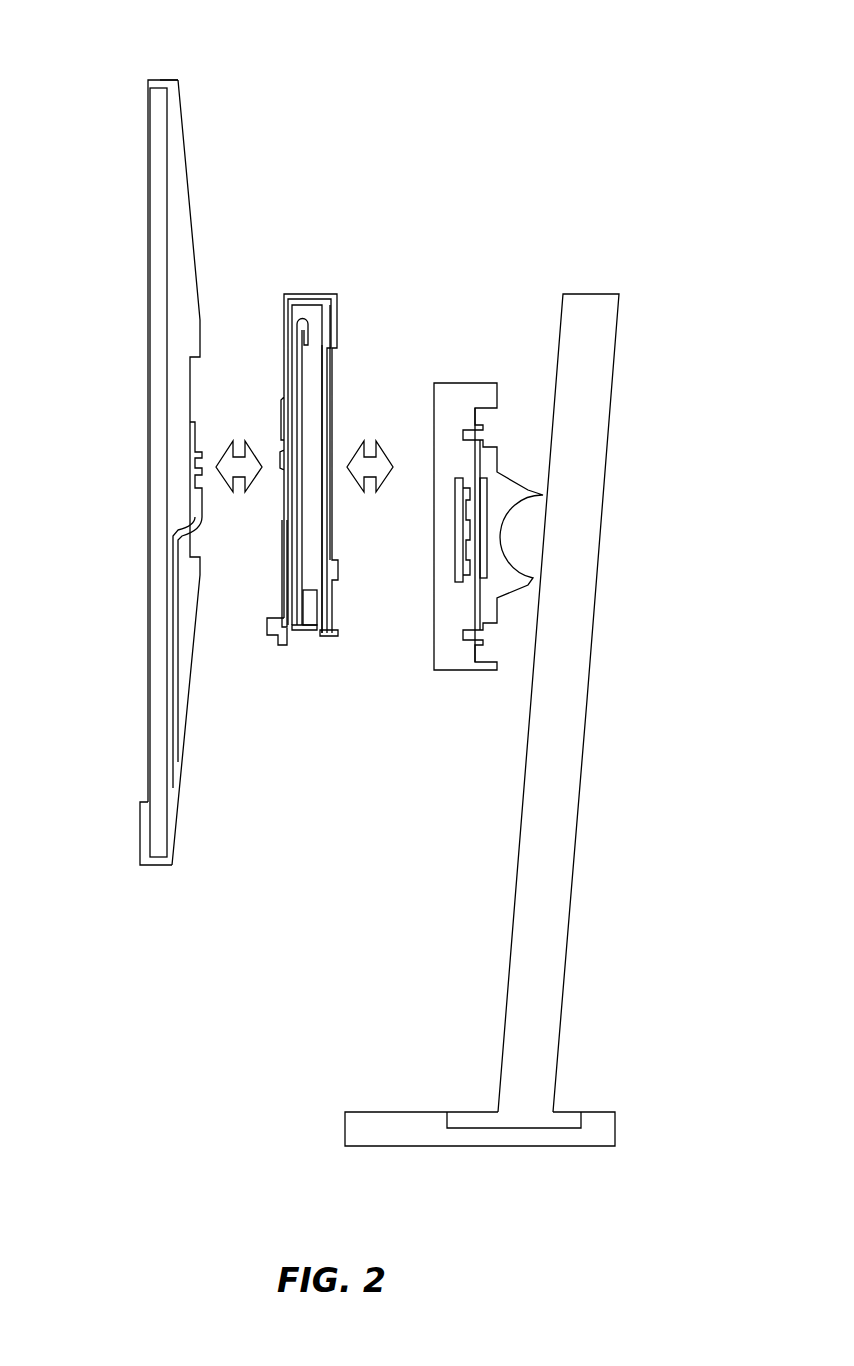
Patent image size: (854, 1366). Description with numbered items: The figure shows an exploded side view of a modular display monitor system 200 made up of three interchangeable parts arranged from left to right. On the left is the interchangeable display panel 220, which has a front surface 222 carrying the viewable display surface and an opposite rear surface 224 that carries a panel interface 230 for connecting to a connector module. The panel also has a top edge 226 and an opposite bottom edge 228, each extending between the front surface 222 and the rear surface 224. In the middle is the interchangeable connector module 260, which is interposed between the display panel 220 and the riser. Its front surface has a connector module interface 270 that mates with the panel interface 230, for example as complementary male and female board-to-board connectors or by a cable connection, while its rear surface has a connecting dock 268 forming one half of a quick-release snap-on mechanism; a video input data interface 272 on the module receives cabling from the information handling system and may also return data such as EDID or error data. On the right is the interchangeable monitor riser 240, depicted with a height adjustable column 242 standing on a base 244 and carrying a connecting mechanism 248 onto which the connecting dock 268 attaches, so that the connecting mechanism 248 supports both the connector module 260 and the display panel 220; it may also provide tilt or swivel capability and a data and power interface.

The modular display monitor system 200 is at (480, 126).
The interchangeable display panel 220 is at (167, 215).
The front surface 222 is at (148, 270).
The rear surface 224 is at (197, 265).
The top edge 226 is at (170, 79).
The bottom edge 228 is at (153, 865).
The panel interface 230 is at (203, 455).
The interchangeable monitor riser 240 is at (583, 810).
The height adjustable column 242 is at (583, 598).
The base 244 is at (605, 1122).
The connecting mechanism 248 is at (435, 415).
The interchangeable connector module 260 is at (338, 318).
The connecting dock 268 is at (330, 495).
The connector module interface 270 is at (285, 498).
The video input data interface 272 is at (307, 628).